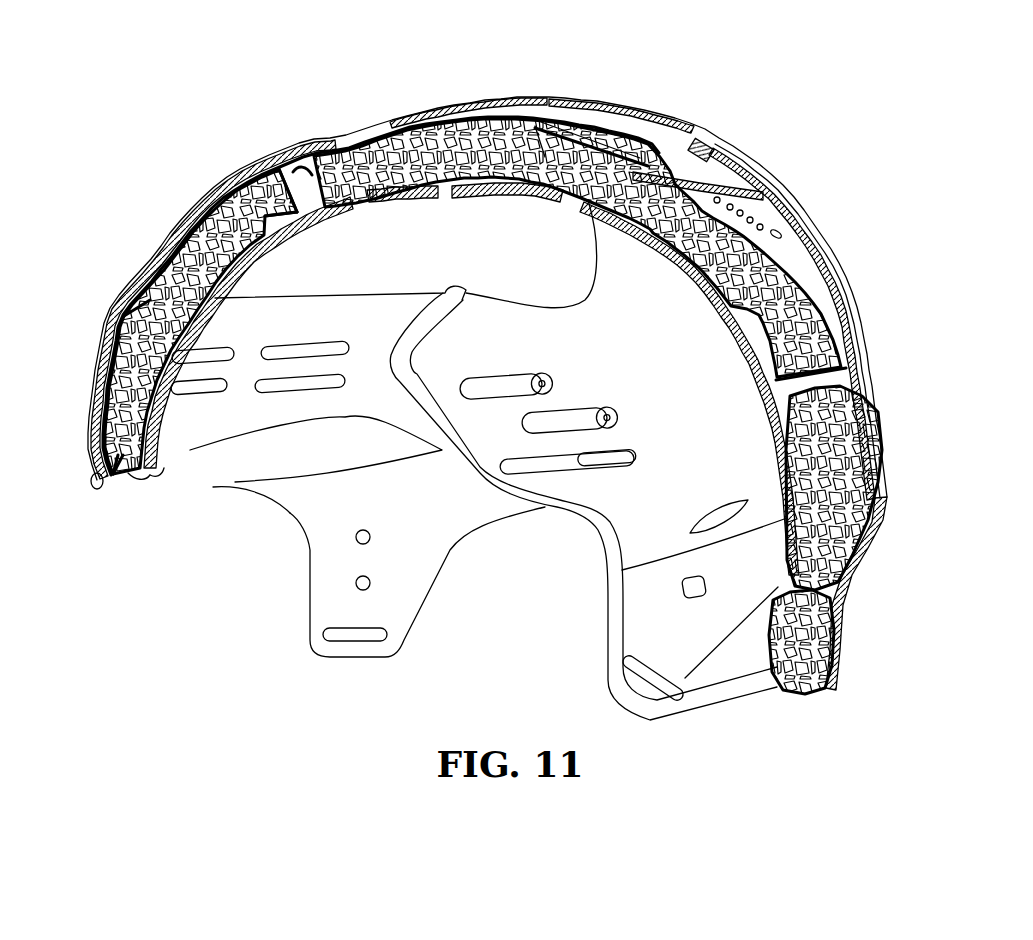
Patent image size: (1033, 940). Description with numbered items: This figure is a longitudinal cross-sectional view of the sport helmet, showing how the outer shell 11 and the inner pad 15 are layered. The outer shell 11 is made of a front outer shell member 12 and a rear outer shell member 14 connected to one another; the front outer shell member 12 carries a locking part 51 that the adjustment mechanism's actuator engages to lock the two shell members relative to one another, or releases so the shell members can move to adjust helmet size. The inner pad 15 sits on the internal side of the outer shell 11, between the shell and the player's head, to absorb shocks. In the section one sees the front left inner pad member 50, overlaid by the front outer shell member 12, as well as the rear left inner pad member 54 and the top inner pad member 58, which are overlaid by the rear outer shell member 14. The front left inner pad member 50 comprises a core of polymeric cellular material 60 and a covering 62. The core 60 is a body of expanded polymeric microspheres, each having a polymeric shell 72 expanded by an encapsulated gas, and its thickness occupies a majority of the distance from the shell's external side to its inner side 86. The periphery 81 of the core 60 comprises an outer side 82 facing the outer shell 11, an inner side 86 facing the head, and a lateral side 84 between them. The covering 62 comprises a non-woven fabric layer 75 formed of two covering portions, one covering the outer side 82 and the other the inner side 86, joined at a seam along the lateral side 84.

The outer shell 11 is at (637, 514).
The front outer shell member 12 is at (120, 315).
The rear outer shell member 14 is at (850, 317).
The inner pad 15 is at (160, 467).
The front left inner pad member 50 is at (123, 455).
The locking part 51 is at (757, 200).
The rear left inner pad member 54 is at (835, 397).
The top inner pad member 58 is at (472, 143).
The core of polymeric cellular material 60 is at (187, 247).
The covering 62 is at (305, 173).
The polymeric shell 72 is at (487, 360).
The fabric layer 75 is at (266, 180).
The periphery 81 is at (100, 447).
The outer side 82 is at (100, 356).
The lateral side 84 is at (128, 473).
The inner side 86 is at (190, 322).